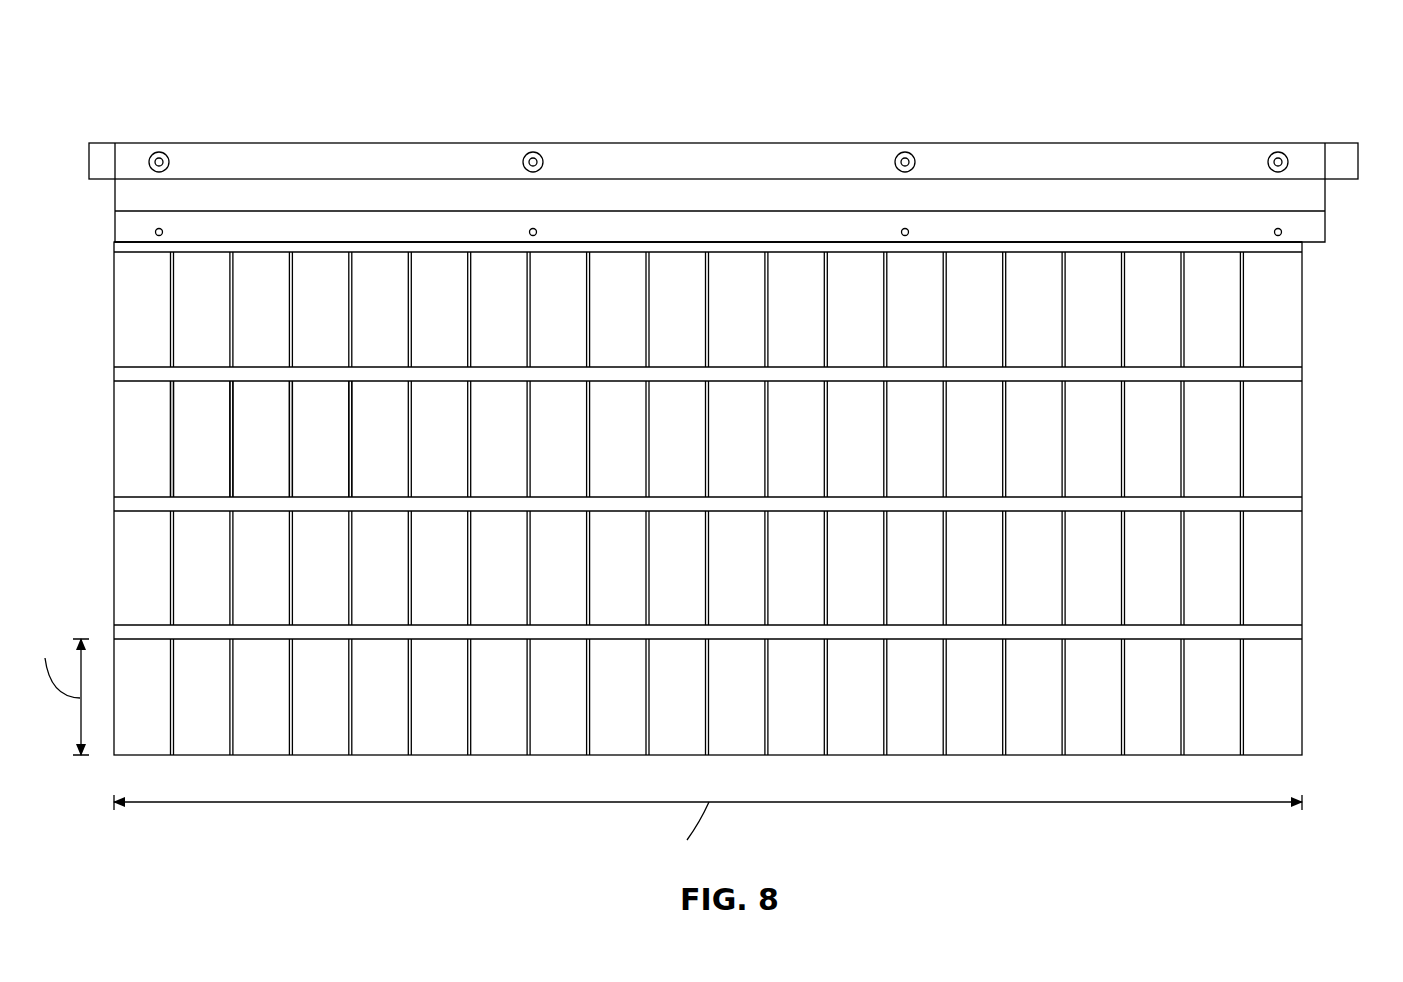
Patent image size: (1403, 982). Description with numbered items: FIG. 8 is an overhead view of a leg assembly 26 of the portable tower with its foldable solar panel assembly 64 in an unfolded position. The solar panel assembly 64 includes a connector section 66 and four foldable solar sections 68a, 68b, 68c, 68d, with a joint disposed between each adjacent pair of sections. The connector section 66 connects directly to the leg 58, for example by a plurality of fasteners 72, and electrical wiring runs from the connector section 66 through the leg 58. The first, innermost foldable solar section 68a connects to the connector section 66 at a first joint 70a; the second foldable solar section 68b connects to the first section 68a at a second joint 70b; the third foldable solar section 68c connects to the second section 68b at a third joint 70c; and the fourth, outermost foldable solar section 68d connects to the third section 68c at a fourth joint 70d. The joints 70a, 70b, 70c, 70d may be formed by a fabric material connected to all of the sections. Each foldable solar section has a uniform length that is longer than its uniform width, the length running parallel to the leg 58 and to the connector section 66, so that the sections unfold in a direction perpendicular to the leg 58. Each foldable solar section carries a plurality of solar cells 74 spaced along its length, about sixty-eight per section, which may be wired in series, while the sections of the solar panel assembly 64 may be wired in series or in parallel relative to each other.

The leg assembly 26 is at (390, 45).
The leg 58 is at (1333, 142).
The solar panel assembly 64 is at (1237, 828).
The connector section 66 is at (1330, 230).
The first foldable solar section 68a is at (1308, 308).
The second foldable solar section 68b is at (1308, 440).
The third foldable solar section 68c is at (1310, 553).
The fourth foldable solar section 68d is at (1310, 712).
The first joint 70a is at (1303, 246).
The second joint 70b is at (1303, 373).
The third joint 70c is at (1303, 503).
The fourth joint 70d is at (1303, 632).
The fasteners 72 is at (158, 152).
The solar cells 74 is at (210, 427).